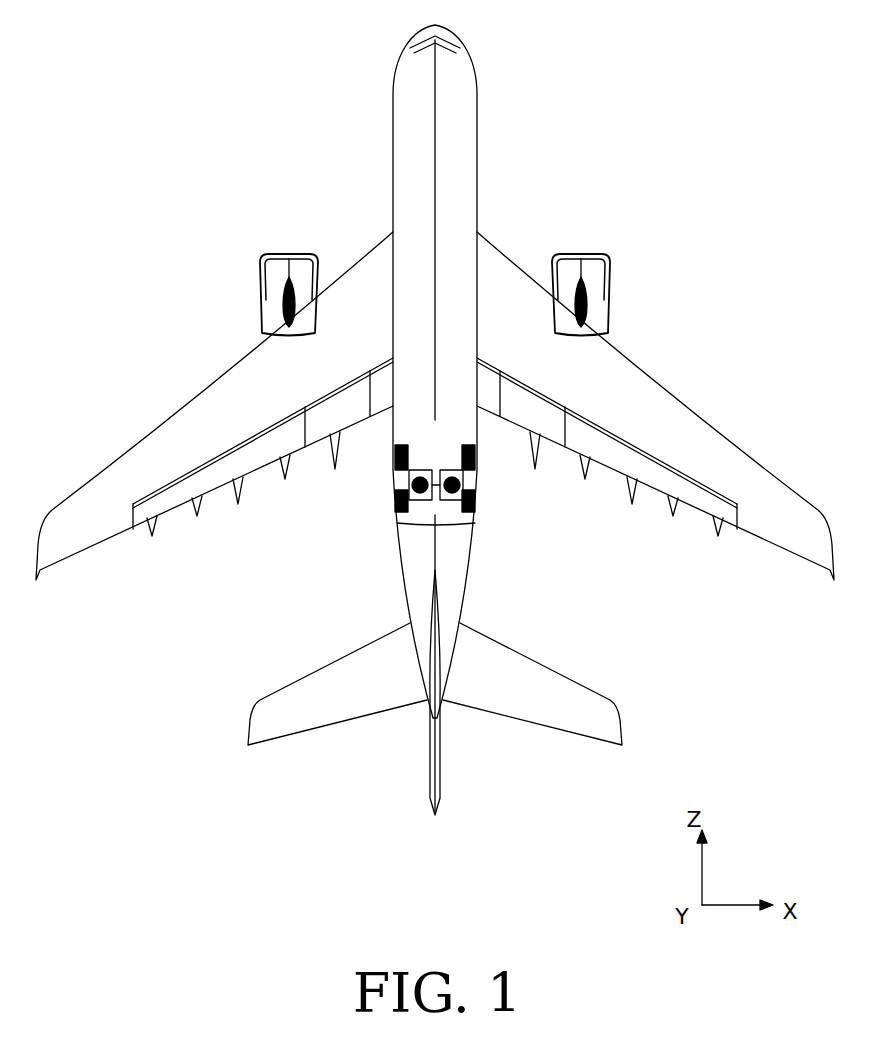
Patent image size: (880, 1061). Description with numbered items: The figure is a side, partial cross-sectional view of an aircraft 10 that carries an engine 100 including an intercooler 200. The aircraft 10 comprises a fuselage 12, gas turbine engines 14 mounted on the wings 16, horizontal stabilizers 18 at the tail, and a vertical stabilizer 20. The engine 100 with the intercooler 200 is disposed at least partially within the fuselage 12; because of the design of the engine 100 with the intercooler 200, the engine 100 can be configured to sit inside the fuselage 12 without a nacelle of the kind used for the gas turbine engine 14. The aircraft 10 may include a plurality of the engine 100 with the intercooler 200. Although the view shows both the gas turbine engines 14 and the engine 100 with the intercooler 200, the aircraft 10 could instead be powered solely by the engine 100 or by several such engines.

The aircraft 10 is at (158, 266).
The fuselage 12 is at (457, 290).
The gas turbine engine 14 is at (264, 270).
The wing 16 is at (353, 348).
The horizontal stabilizer 18 is at (545, 690).
The vertical stabilizer 20 is at (432, 640).
The engine 100 is at (376, 489).
The intercooler 200 is at (478, 484).